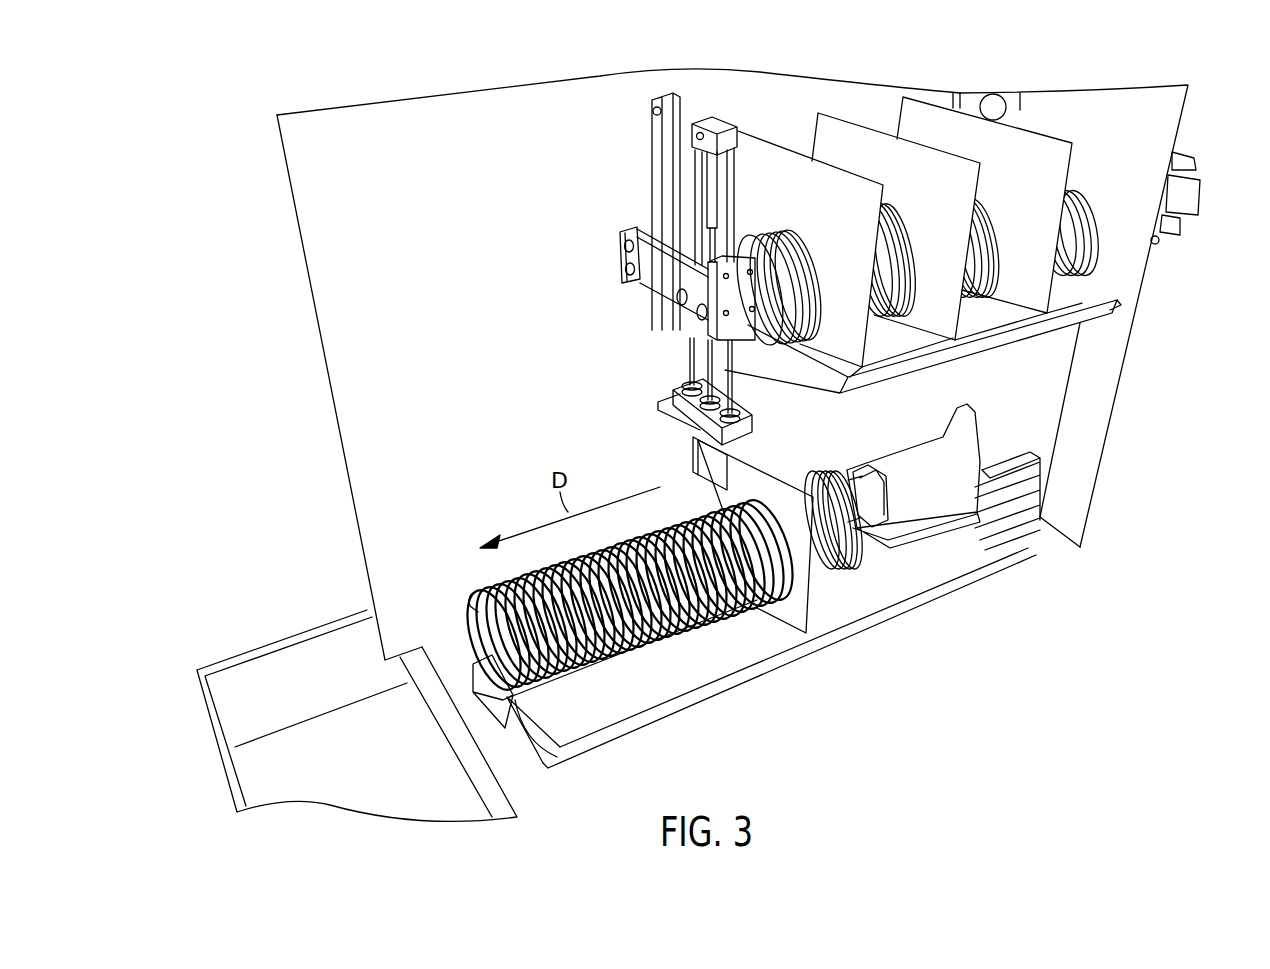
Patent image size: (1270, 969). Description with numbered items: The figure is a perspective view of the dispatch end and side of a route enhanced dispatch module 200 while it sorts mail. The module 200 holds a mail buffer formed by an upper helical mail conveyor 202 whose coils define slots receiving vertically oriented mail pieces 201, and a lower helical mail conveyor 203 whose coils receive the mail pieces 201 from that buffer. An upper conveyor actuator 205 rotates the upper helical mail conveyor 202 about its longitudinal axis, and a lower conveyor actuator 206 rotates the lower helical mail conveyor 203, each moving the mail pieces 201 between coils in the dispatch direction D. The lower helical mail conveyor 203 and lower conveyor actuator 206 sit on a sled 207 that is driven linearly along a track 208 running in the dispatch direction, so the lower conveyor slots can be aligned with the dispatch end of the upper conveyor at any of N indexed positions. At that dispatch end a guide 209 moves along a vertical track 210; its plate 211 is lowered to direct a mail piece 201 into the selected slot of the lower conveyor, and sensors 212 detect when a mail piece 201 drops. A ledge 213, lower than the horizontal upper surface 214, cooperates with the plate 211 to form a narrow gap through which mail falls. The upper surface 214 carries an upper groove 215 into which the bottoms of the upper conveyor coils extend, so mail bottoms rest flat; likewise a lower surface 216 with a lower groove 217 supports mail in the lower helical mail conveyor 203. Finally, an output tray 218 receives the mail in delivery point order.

The route enhanced dispatch module 200 is at (488, 244).
The mail piece 201 is at (803, 165).
The upper helical mail conveyor 202 is at (990, 280).
The lower helical mail conveyor 203 is at (627, 650).
The upper conveyor actuator 205 is at (1178, 203).
The lower conveyor actuator 206 is at (940, 497).
The sled 207 is at (763, 665).
The track 208 is at (1017, 507).
The guide 209 is at (660, 321).
The vertical track 210 is at (700, 208).
The plate 211 is at (842, 563).
The sensors 212 is at (670, 260).
The ledge 213 is at (880, 513).
The upper surface 214 is at (1073, 297).
The upper groove 215 is at (777, 300).
The lower surface 216 is at (598, 717).
The lower groove 217 is at (555, 753).
The output tray 218 is at (315, 667).